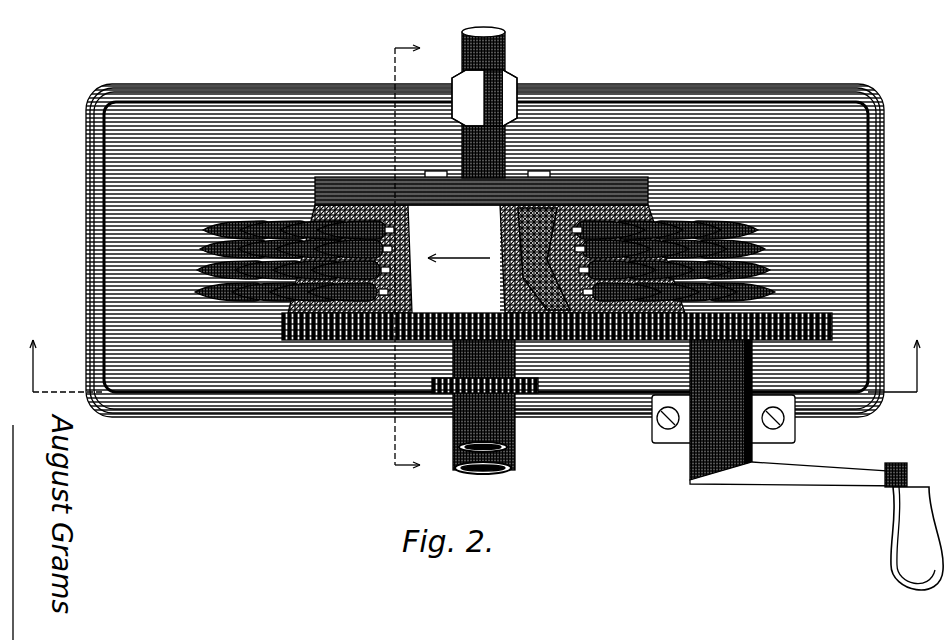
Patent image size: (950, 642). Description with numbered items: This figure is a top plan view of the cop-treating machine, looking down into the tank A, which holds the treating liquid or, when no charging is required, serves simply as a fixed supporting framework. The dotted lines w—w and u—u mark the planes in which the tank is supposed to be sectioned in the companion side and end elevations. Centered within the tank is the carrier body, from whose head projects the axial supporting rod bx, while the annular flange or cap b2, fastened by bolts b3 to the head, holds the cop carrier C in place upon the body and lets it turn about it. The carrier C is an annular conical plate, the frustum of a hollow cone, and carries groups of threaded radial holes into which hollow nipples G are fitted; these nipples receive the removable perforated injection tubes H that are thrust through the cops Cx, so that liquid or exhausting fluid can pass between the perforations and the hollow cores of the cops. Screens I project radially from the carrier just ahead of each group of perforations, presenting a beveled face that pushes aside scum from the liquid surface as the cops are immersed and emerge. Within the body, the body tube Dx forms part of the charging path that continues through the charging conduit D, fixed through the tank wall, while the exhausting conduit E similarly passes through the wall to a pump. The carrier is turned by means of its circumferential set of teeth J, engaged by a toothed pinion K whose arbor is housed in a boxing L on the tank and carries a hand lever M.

The tank A is at (215, 80).
The dotted line u— u is at (393, 253).
The supporting rod bx is at (503, 57).
The bolts b3 is at (346, 178).
The annular flange or cap b2 is at (481, 188).
The cops Cx is at (232, 228).
The hollow nipples G is at (396, 233).
The screens I is at (518, 240).
The cop carrier C is at (454, 259).
The perforated injection tubes H is at (200, 271).
The circumferential set of teeth J is at (462, 269).
The toothed pinion K is at (834, 326).
The body tube D× Dx is at (455, 352).
The exhausting conduit E is at (474, 391).
The boxing L is at (723, 410).
The charging conduit D is at (494, 474).
The hand lever M is at (903, 544).
The dotted line w— w is at (470, 371).